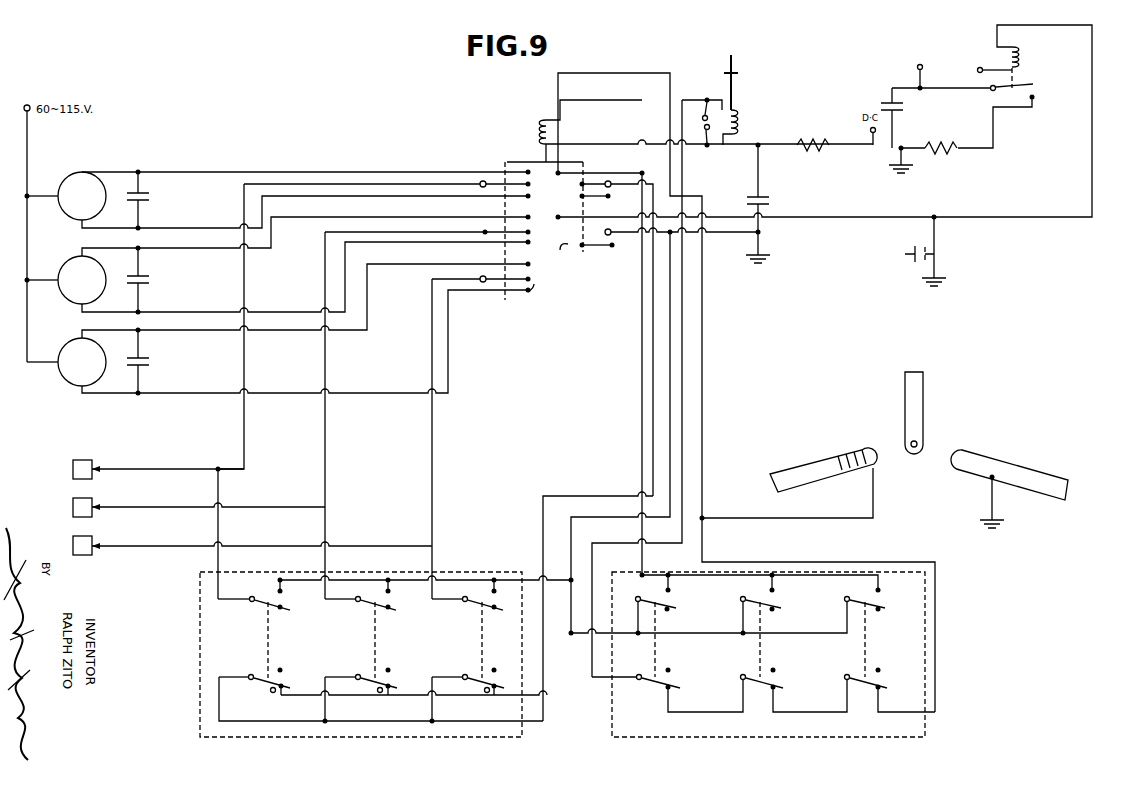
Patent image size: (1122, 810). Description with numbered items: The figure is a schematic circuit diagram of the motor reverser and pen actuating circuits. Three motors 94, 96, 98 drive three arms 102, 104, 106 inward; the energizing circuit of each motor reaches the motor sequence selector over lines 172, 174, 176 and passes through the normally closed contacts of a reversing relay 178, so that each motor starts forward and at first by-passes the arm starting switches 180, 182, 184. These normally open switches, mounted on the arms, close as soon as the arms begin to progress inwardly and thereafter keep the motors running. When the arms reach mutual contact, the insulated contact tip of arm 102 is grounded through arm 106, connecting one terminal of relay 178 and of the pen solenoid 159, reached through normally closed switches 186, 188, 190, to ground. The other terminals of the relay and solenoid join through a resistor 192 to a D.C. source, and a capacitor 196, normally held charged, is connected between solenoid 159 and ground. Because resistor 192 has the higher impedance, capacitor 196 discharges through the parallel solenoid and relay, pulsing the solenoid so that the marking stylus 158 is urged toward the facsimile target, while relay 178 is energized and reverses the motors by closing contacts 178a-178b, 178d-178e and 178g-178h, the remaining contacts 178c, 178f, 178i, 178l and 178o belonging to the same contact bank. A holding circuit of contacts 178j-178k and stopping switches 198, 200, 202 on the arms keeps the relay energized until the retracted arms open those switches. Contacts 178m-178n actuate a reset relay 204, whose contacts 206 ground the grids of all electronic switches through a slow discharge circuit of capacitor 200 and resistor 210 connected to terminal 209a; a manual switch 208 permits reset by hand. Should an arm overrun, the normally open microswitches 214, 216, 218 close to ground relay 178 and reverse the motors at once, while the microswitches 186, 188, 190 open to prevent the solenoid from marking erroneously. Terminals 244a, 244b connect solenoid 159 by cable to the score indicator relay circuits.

The motor 94 is at (66, 182).
The motor 96 is at (66, 268).
The motor 98 is at (66, 350).
The arm 102 is at (819, 468).
The arm 104 is at (918, 399).
The arm 106 is at (1020, 470).
The marking stylus 158 is at (734, 60).
The pen solenoid 159 is at (738, 122).
The line 172 is at (72, 469).
The line 174 is at (72, 507).
The line 176 is at (72, 545).
The reversing relay 178 is at (553, 137).
The relay contact 178a is at (528, 169).
The relay contact 178b is at (500, 182).
The relay contact 178c is at (526, 199).
The relay contact 178d is at (526, 218).
The relay contact 178e is at (485, 231).
The relay contact 178f is at (533, 262).
The relay contact 178g is at (526, 264).
The relay contact 178h is at (536, 279).
The relay contact 178i is at (534, 292).
The relay contact 178j is at (564, 169).
The relay contact 178k is at (561, 190).
The relay contact 178l is at (570, 198).
The relay contact 178m is at (560, 256).
The relay contact 178n is at (562, 250).
The relay contact 178o is at (566, 246).
The arm starting switch 180 is at (260, 608).
The arm starting switch 182 is at (374, 608).
The arm starting switch 184 is at (482, 608).
The normally closed microswitch 186 is at (652, 672).
The normally closed microswitch 188 is at (758, 660).
The normally closed microswitch 190 is at (868, 674).
The resistor 192 is at (818, 131).
The capacitor 196 is at (760, 196).
The stopping switch 198 is at (263, 676).
The capacitor 200 is at (889, 100).
The stopping switch 202 is at (481, 674).
The reset relay 204 is at (1019, 58).
The contacts 206 is at (1035, 95).
The switch 208 is at (904, 255).
The terminal 209a is at (920, 64).
The resistor 210 is at (945, 143).
The normally open microswitch 214 is at (654, 596).
The normally open microswitch 216 is at (765, 596).
The normally open microswitch 218 is at (872, 596).
The terminal 244a is at (705, 108).
The terminal 244b is at (706, 148).